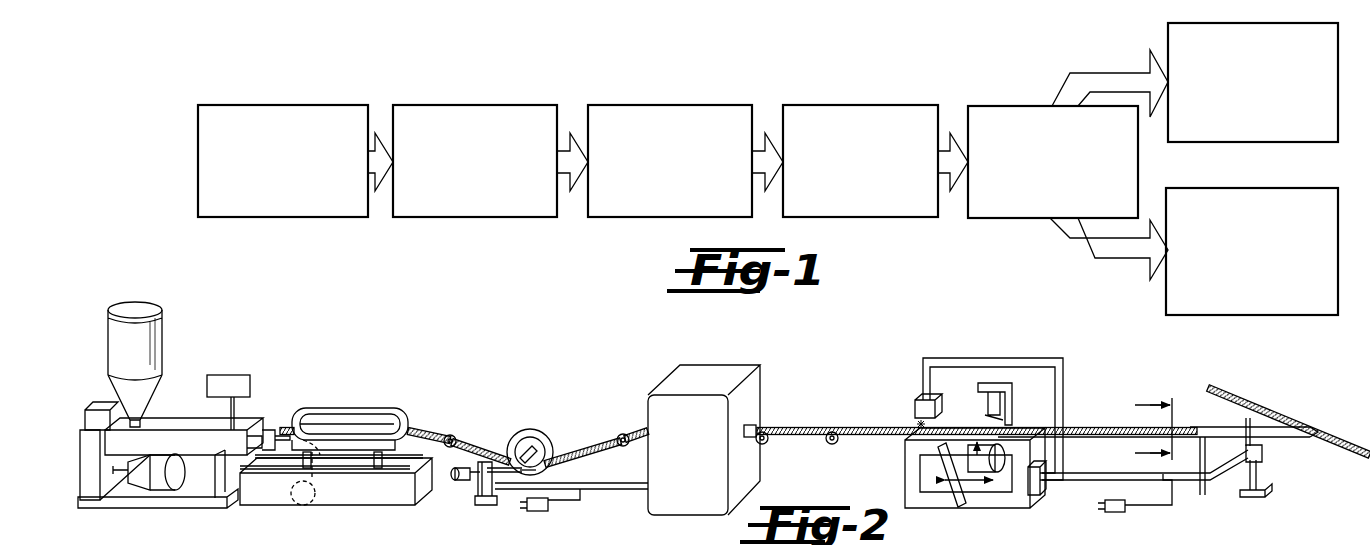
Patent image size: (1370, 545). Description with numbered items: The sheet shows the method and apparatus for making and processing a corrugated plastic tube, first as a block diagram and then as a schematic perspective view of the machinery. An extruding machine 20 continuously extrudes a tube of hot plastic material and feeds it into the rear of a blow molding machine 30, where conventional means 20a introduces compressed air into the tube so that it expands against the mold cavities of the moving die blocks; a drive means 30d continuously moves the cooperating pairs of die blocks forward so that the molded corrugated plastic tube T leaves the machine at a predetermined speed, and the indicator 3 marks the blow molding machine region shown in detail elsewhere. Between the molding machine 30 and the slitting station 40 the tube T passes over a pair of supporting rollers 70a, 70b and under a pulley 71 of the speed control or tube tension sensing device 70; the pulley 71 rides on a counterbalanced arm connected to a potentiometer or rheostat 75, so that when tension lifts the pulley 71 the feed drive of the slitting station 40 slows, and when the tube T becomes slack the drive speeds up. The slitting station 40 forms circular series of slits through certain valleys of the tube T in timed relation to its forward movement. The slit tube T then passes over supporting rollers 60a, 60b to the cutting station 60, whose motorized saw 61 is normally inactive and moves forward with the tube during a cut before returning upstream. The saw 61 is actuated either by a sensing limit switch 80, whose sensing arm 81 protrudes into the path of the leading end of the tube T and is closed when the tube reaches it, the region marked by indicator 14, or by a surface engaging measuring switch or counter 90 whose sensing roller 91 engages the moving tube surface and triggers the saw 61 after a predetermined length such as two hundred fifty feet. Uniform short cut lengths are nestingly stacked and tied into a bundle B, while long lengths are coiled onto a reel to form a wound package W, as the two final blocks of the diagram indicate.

In FIG. 1, the extruding machine 20 is at (277, 105).
In FIG. 2, the extruding machine 20 is at (183, 420).
In FIG. 2, the conventional means for introducing compressed air 20a is at (285, 428).
In FIG. 1, the blow molding machine 30 is at (470, 105).
In FIG. 2, the blow molding machine 30 is at (347, 418).
In FIG. 2, the drive means 30d is at (318, 502).
In FIG. 2, the section line for FIG. 3 is at (393, 362).
In FIG. 2, the corrugated plastic tube T is at (439, 426).
In FIG. 1, the speed control or tube tension sensing device 70 is at (672, 105).
In FIG. 2, the speed control or tube tension sensing device 70 is at (546, 434).
In FIG. 2, the supporting roller 70a is at (455, 434).
In FIG. 2, the supporting roller 70b is at (617, 435).
In FIG. 2, the pulley 71 is at (548, 466).
In FIG. 2, the potentiometer or rheostat 75 is at (485, 497).
In FIG. 1, the slitting machine or station 40 is at (880, 105).
In FIG. 2, the slitting machine or station 40 is at (728, 382).
In FIG. 1, the cutting machine or cutting station 60 is at (1010, 106).
In FIG. 2, the cutting machine or cutting station 60 is at (982, 505).
In FIG. 2, the supporting roller 60a is at (765, 445).
In FIG. 2, the supporting roller 60b is at (832, 446).
In FIG. 2, the motorized saw 61 is at (1010, 482).
In FIG. 2, the surface engaging measuring switch or counter 90 is at (917, 400).
In FIG. 2, the measuring or sensing roller 91 is at (912, 414).
In FIG. 2, the cut length spacing 14 is at (1138, 432).
In FIG. 2, the sensing limit switch 80 is at (1268, 455).
In FIG. 2, the sensing arm 81 is at (1244, 420).
In FIG. 1, the bundle B is at (1255, 143).
In FIG. 1, the wound package W is at (1253, 318).